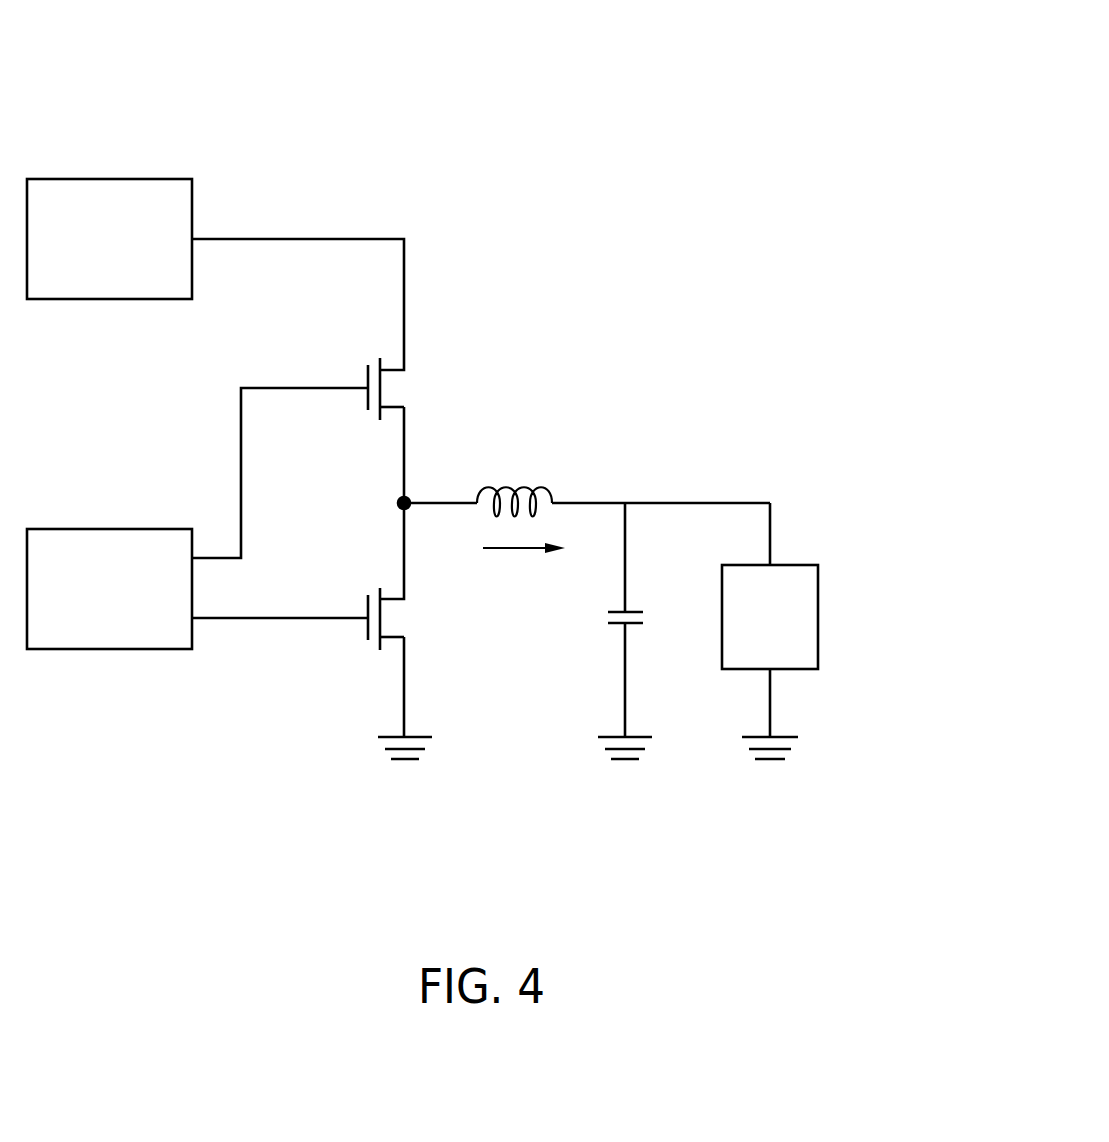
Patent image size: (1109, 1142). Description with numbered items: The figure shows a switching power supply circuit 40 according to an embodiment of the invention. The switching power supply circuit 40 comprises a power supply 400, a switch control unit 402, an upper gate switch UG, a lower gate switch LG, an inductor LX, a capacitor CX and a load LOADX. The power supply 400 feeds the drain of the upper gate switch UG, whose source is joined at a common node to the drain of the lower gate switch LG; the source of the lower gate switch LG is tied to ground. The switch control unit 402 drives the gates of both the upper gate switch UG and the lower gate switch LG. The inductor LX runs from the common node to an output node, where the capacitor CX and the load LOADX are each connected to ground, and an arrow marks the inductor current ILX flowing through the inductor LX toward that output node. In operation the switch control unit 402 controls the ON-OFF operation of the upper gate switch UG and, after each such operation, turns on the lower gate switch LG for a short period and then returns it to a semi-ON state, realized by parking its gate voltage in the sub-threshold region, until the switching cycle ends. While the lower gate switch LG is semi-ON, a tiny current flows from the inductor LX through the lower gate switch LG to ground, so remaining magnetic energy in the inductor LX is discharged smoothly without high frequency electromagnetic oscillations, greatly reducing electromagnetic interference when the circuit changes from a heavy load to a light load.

The switching power supply circuit 40 is at (703, 95).
The power supply 400 is at (108, 178).
The switch control unit 402 is at (108, 528).
The upper gate switch UG is at (410, 389).
The lower gate switch LG is at (410, 619).
The inductor LX is at (514, 484).
The inductor current ILX is at (524, 565).
The capacitor CX is at (646, 620).
The load LOADX is at (825, 620).